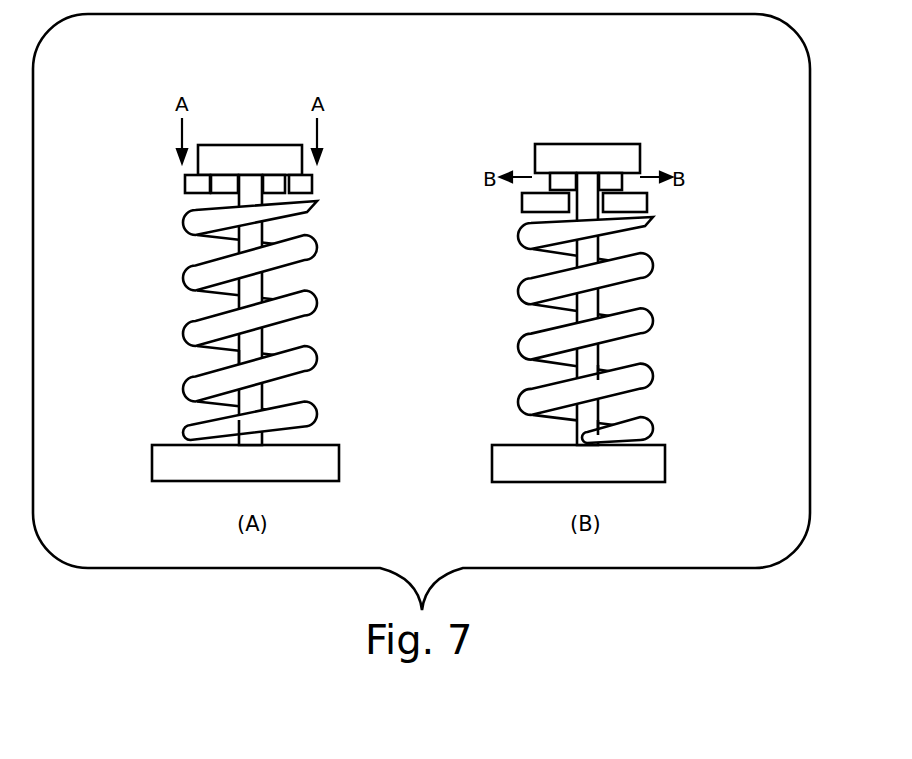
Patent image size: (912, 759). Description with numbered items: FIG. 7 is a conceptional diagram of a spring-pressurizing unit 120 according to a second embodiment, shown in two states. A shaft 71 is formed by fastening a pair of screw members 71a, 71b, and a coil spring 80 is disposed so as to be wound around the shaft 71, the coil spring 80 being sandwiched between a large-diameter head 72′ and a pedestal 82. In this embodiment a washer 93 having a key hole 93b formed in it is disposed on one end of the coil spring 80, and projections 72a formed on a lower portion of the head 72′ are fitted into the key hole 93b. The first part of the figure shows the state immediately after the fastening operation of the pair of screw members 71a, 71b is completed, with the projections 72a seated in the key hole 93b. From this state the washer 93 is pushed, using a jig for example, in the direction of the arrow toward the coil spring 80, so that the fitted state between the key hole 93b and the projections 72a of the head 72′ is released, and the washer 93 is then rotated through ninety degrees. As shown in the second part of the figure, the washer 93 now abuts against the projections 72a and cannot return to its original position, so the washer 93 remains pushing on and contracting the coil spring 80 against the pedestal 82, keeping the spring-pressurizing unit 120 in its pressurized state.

The spring-pressurizing unit 120 is at (365, 92).
The head 72′ is at (219, 148).
The projections 72a is at (218, 187).
The washer 93 is at (312, 180).
The key hole 93b is at (273, 180).
The coil spring 80 is at (303, 310).
The shaft 71 is at (250, 342).
The screw member 71a is at (303, 355).
The screw member 71b is at (303, 407).
The pedestal 82 is at (330, 462).